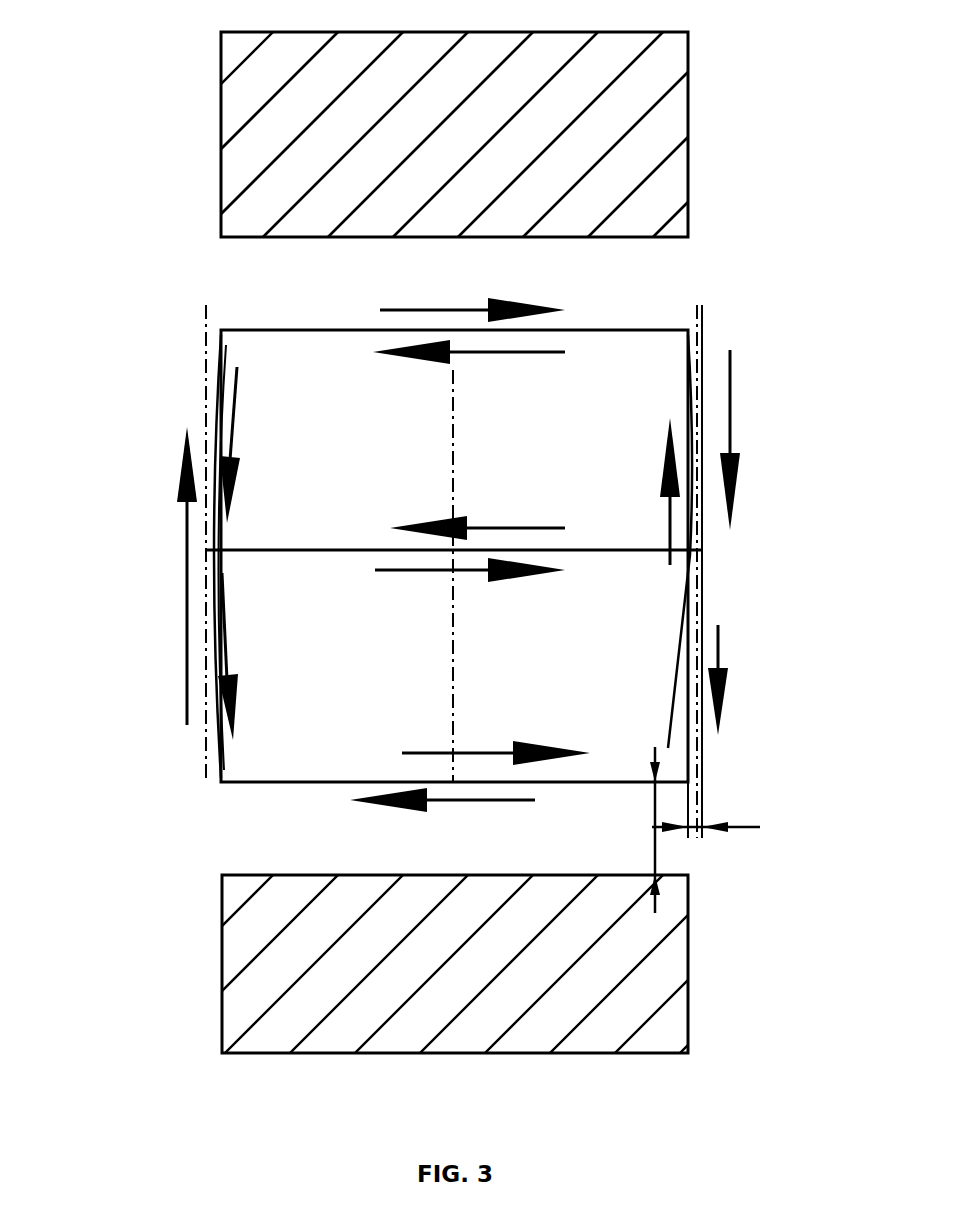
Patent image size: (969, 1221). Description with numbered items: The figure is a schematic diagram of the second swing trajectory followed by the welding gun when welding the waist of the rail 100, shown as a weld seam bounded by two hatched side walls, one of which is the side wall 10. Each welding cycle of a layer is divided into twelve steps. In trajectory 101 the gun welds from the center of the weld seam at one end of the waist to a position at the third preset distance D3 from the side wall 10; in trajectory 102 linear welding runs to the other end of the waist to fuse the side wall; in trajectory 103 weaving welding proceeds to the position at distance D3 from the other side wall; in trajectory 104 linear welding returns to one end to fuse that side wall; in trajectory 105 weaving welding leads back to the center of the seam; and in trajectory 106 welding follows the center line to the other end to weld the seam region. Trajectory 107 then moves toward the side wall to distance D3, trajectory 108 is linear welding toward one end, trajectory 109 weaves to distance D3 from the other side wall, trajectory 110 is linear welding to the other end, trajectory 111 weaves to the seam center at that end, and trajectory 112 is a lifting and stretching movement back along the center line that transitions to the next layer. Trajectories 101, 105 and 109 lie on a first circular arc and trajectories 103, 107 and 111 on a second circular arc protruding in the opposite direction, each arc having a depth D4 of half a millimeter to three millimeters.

The rail 100 is at (670, 122).
The side wall 10 is at (627, 237).
The trajectory 101 is at (758, 680).
The trajectory 102 is at (442, 820).
The trajectory 103 is at (157, 576).
The trajectory 104 is at (472, 297).
The trajectory 105 is at (762, 440).
The trajectory 106 is at (477, 512).
The trajectory 107 is at (258, 656).
The trajectory 108 is at (496, 741).
The trajectory 109 is at (640, 491).
The trajectory 110 is at (469, 374).
The trajectory 111 is at (263, 445).
The trajectory 112 is at (470, 590).
The third preset distance D3 is at (638, 830).
The depth of the first and second circular arcs D4 is at (706, 850).